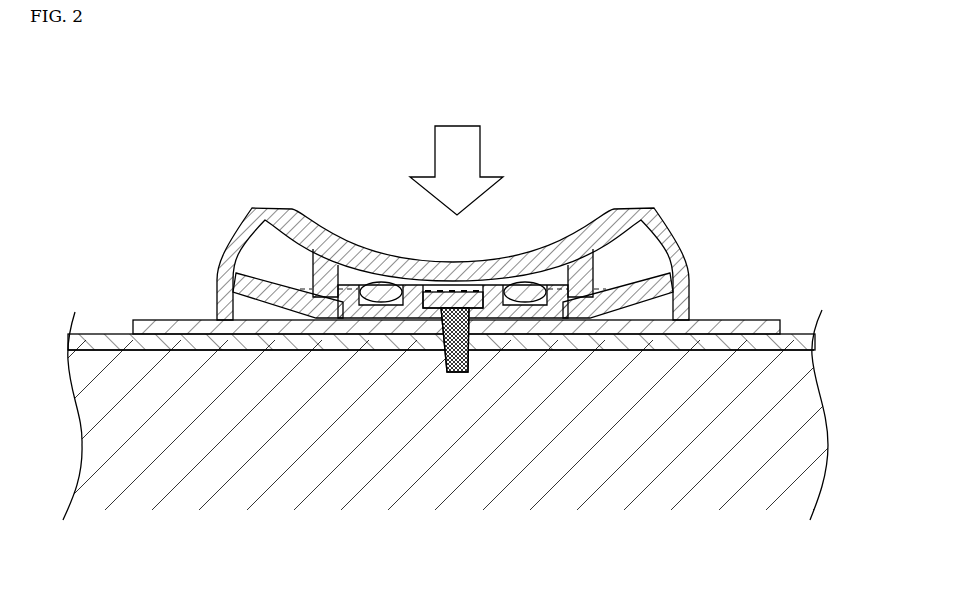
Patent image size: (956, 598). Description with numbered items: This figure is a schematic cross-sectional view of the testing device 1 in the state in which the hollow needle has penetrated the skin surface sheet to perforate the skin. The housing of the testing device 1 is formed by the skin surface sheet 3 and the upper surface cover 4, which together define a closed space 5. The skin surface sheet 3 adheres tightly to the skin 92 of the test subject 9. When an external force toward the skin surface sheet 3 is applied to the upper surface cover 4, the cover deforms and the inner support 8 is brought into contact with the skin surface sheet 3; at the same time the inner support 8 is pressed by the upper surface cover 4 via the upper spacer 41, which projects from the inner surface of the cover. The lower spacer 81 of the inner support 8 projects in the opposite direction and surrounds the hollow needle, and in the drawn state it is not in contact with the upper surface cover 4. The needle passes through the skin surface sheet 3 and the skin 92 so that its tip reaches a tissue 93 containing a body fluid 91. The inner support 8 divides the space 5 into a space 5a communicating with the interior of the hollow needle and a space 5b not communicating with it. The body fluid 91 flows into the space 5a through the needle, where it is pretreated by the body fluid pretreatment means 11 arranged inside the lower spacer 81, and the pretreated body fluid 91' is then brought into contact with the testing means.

The testing device 1 is at (445, 309).
The skin surface sheet 3 is at (755, 320).
The upper surface cover 4 is at (513, 210).
The upper spacer 41 is at (597, 268).
The closed space 5 is at (507, 260).
The space communicating with the interior of the hollow needle 5a is at (643, 250).
The space not communicating with the interior of the hollow needle 5b is at (494, 289).
The inner support 8 is at (260, 279).
The lower spacer 81 is at (493, 290).
The test subject 9 is at (445, 362).
The skin 92 is at (103, 337).
The tissue 93 is at (148, 395).
The body fluid pretreatment means 11 is at (440, 295).
The body fluid 91 is at (503, 467).
The pretreated body fluid 91' is at (359, 242).